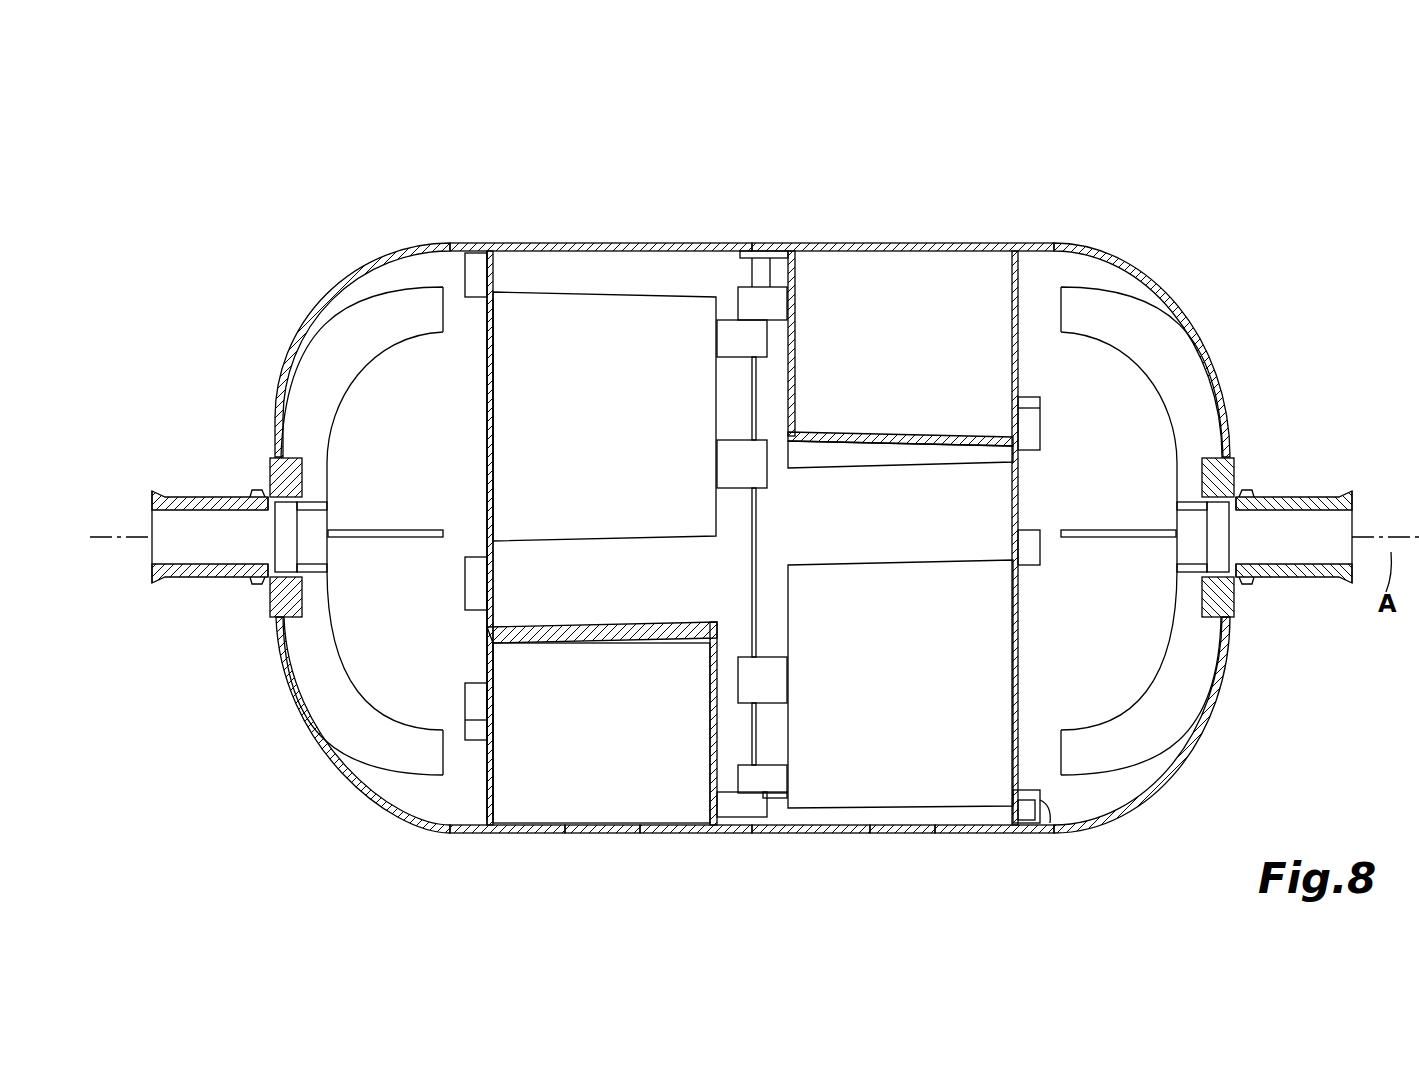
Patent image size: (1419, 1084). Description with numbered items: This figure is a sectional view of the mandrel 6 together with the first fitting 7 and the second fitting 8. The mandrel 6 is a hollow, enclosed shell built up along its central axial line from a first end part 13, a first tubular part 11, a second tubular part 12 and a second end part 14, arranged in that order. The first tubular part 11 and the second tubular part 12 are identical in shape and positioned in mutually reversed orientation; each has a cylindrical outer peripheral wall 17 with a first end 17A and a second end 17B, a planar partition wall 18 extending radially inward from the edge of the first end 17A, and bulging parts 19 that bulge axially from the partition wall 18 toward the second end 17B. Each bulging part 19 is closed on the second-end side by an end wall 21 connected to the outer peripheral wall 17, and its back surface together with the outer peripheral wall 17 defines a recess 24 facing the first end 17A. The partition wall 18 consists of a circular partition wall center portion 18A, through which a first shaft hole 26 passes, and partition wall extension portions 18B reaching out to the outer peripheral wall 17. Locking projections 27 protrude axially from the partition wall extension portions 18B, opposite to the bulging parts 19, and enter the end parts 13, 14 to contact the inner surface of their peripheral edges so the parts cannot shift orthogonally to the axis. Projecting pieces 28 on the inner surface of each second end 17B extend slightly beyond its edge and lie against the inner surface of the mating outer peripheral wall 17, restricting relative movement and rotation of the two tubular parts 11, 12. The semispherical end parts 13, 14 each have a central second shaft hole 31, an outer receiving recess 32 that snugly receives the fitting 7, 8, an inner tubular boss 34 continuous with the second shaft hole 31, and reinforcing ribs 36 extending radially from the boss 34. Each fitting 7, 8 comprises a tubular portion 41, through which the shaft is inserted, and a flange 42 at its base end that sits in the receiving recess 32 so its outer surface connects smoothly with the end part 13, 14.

The mandrel 6 is at (737, 165).
The first fitting 7 is at (172, 465).
The second fitting 8 is at (1328, 465).
The first tubular part 11 is at (627, 237).
The second tubular part 12 is at (917, 237).
The first end part 13 is at (351, 266).
The second end part 14 is at (1153, 264).
The outer peripheral wall 17 is at (600, 838).
The first end 17A is at (510, 838).
The second end 17B is at (685, 838).
The partition wall 18 is at (487, 372).
The partition wall center portion 18A is at (487, 453).
The partition wall extension portion 18B is at (495, 318).
The bulging part 19 is at (655, 622).
The end wall 21 is at (710, 712).
The recess 24 is at (540, 824).
The first shaft hole 26 is at (490, 519).
The locking projection 27 is at (466, 697).
The projecting piece 28 is at (785, 777).
The second shaft hole 31 is at (322, 553).
The receiving recess 32 is at (283, 600).
The tubular boss 34 is at (312, 505).
The reinforcing rib 36 is at (336, 652).
The tubular portion 41 is at (217, 496).
The flange 42 is at (268, 470).